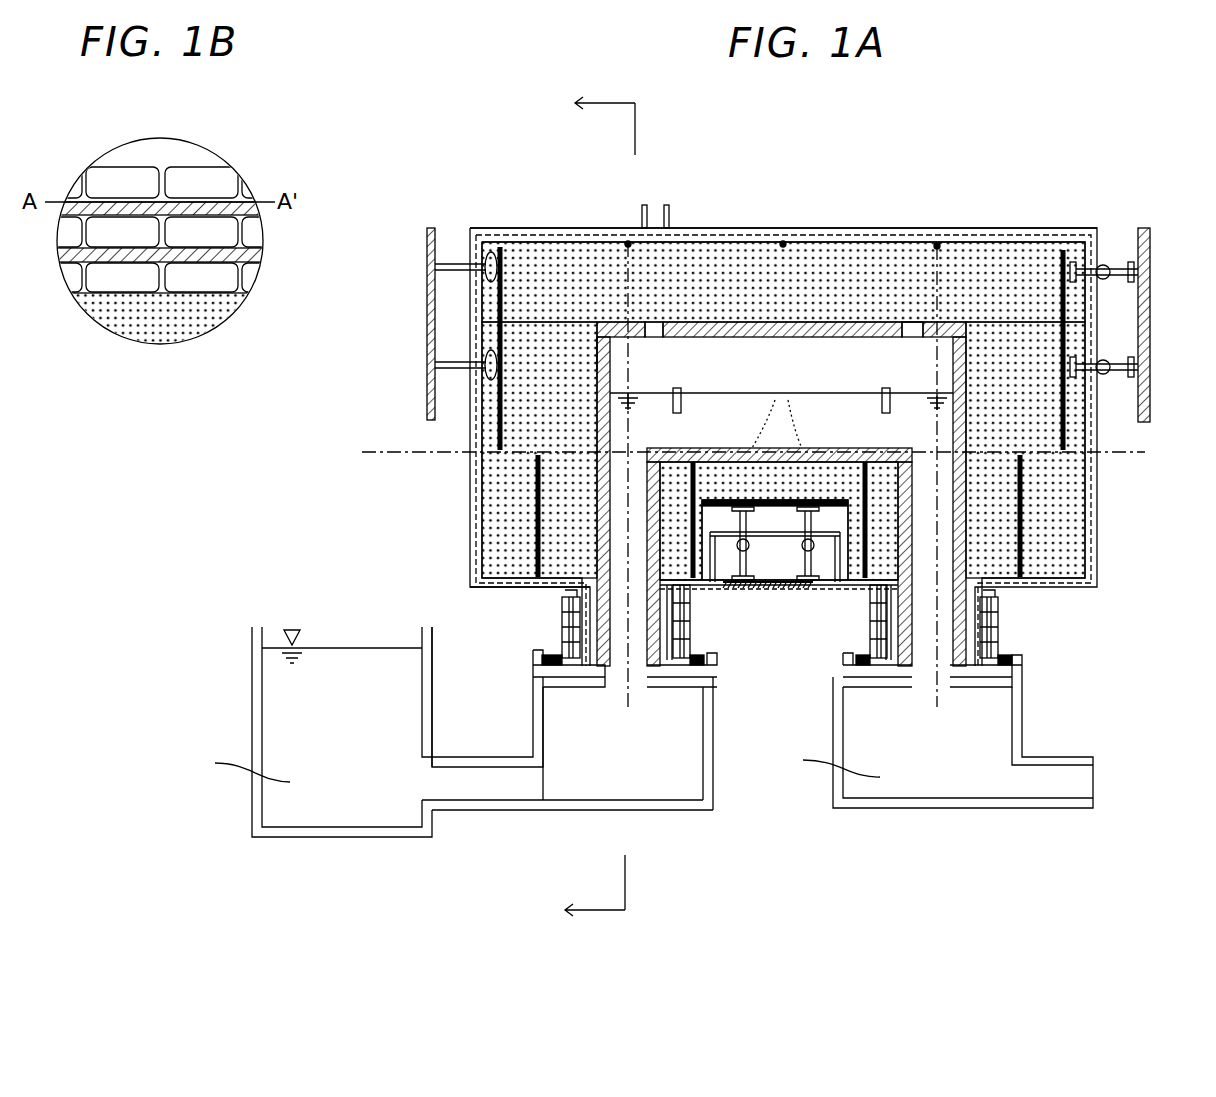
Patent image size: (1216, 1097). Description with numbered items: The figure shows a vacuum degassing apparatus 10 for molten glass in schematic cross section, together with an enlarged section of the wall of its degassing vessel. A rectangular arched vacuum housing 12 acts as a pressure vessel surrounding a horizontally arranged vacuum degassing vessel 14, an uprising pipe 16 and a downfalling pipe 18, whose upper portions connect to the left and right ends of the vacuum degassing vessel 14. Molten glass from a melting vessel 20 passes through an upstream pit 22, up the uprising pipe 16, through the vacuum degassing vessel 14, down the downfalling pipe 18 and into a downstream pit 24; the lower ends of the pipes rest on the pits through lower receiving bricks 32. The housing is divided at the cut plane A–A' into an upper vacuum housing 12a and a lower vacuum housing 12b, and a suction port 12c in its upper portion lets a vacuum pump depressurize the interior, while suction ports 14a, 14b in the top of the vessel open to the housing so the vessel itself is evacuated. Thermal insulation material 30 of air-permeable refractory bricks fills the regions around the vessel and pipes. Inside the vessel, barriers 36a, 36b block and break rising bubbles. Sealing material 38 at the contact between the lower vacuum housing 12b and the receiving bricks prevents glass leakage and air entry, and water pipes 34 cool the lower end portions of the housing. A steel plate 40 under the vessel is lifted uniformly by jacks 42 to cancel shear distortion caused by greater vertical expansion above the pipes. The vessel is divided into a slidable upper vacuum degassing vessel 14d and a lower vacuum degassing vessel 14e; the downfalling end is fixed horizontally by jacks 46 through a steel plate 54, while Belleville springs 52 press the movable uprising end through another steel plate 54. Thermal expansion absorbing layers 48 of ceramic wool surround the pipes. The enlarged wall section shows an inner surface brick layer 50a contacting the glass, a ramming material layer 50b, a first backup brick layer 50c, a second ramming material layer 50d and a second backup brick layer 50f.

In FIG. 1A, the vacuum degassing apparatus 10 is at (837, 170).
In FIG. 1A, the vacuum housing 12 is at (557, 227).
In FIG. 1A, the upper vacuum housing 12a is at (500, 235).
In FIG. 1A, the lower vacuum housing 12b is at (470, 570).
In FIG. 1A, the suction port 12c is at (657, 213).
In FIG. 1A, the vacuum degassing vessel 14 is at (723, 320).
In FIG. 1A, the suction port 14a is at (653, 327).
In FIG. 1A, the suction port 14b is at (915, 327).
In FIG. 1A, the upper vacuum degassing vessel 14d is at (597, 350).
In FIG. 1A, the lower vacuum degassing vessel 14e is at (904, 412).
In FIG. 1A, the uprising pipe 16 is at (598, 468).
In FIG. 1A, the downfalling pipe 18 is at (883, 640).
In FIG. 1A, the melting vessel 20 is at (427, 707).
In FIG. 1A, the upstream pit 22 is at (712, 720).
In FIG. 1A, the downstream pit 24 is at (1018, 718).
In FIG. 1B, the thermal insulation material 30 is at (165, 320).
In FIG. 1A, the thermal insulation material 30 is at (507, 482).
In FIG. 1A, the lower receiving bricks 32 is at (710, 670).
In FIG. 1A, the water pipes 34 is at (568, 618).
In FIG. 1A, the barrier 36a is at (690, 394).
In FIG. 1A, the barrier 36b is at (878, 393).
In FIG. 1A, the sealing material 38 is at (547, 650).
In FIG. 1A, the steel plate 40 is at (736, 498).
In FIG. 1A, the jacks 42 is at (805, 547).
In FIG. 1A, the jacks 46 is at (1108, 361).
In FIG. 1A, the thermal expansion absorbing layers 48 is at (533, 503).
In FIG. 1B, the inner surface brick layer 50a is at (221, 183).
In FIG. 1B, the ramming material layer 50b is at (248, 193).
In FIG. 1B, the first backup brick layer 50c is at (223, 237).
In FIG. 1B, the ramming material layer 50d is at (250, 257).
In FIG. 1B, the second backup brick layer 50f is at (213, 282).
In FIG. 1A, the Belleville springs 52 is at (488, 286).
In FIG. 1A, the steel plate 54 is at (497, 240).